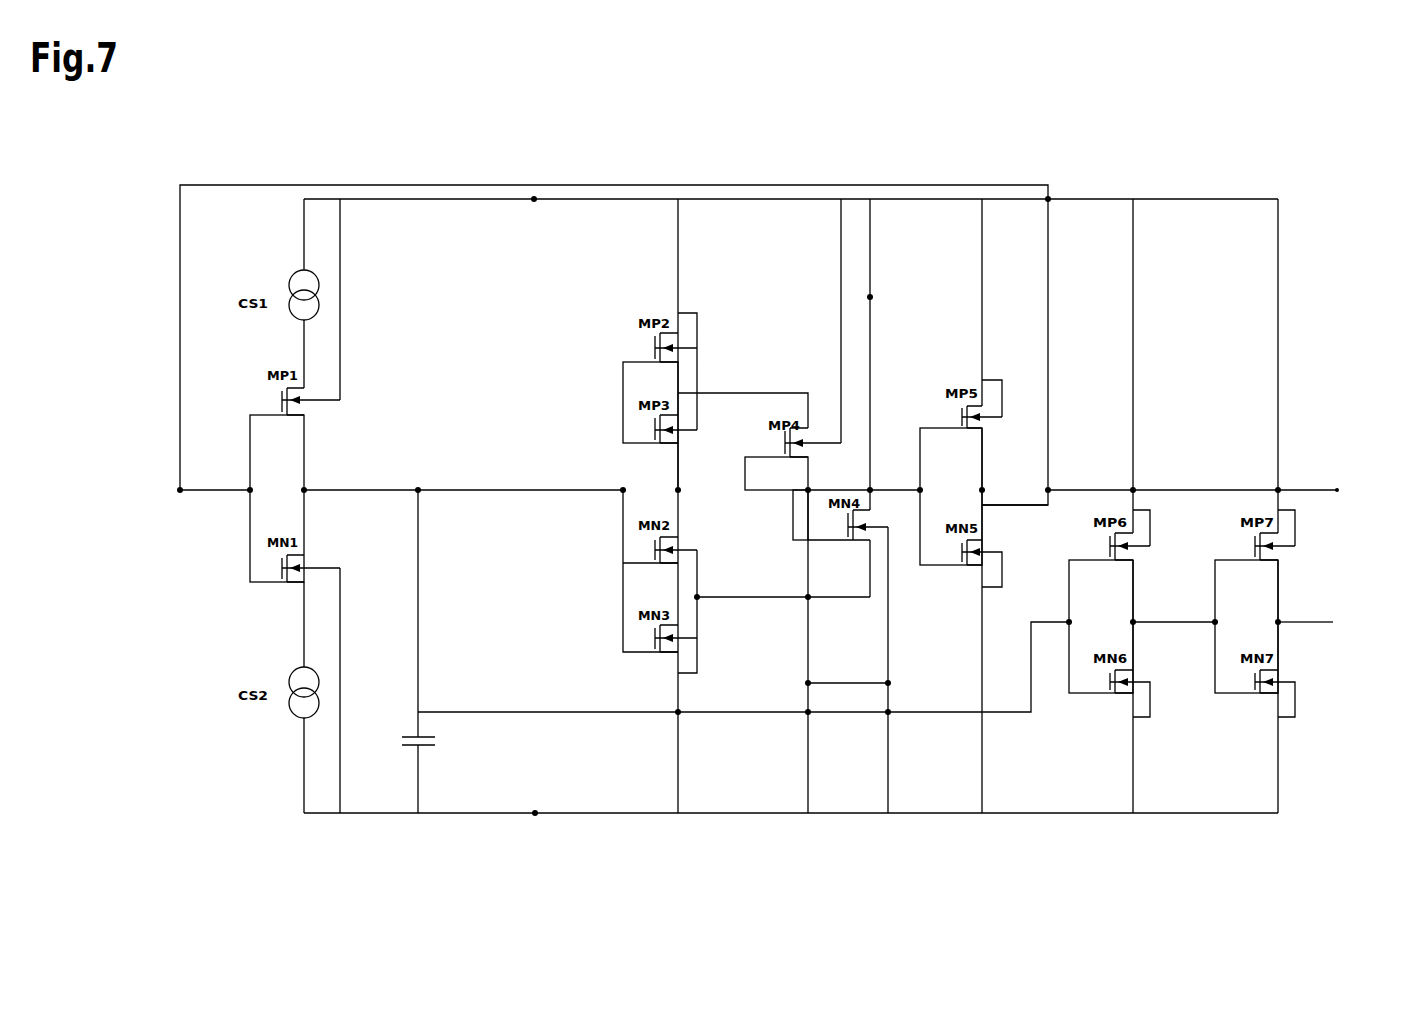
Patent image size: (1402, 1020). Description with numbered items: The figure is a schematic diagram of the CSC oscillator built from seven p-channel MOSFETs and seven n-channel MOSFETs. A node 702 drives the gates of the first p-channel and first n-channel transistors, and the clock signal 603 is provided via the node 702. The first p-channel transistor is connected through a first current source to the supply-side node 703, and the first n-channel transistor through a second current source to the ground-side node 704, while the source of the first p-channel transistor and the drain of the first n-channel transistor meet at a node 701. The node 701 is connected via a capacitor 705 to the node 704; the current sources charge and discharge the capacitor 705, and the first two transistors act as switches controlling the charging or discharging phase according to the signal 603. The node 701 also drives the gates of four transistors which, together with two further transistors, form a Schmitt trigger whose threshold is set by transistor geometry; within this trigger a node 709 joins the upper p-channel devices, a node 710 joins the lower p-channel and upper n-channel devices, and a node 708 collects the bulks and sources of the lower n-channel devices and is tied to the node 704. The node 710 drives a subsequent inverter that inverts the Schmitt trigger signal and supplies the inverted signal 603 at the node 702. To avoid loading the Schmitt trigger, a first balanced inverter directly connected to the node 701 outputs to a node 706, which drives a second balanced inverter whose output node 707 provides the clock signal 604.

The node 701 is at (463, 598).
The node 702 is at (633, 345).
The node 703 is at (791, 216).
The node 704 is at (791, 829).
The capacitor 705 is at (401, 769).
The node 706 is at (1174, 607).
The node 707 is at (1295, 607).
The node 708 is at (774, 606).
The node 709 is at (743, 394).
The node 710 is at (695, 468).
The clock signal 603 is at (1211, 489).
The clock signal 604 is at (1338, 622).